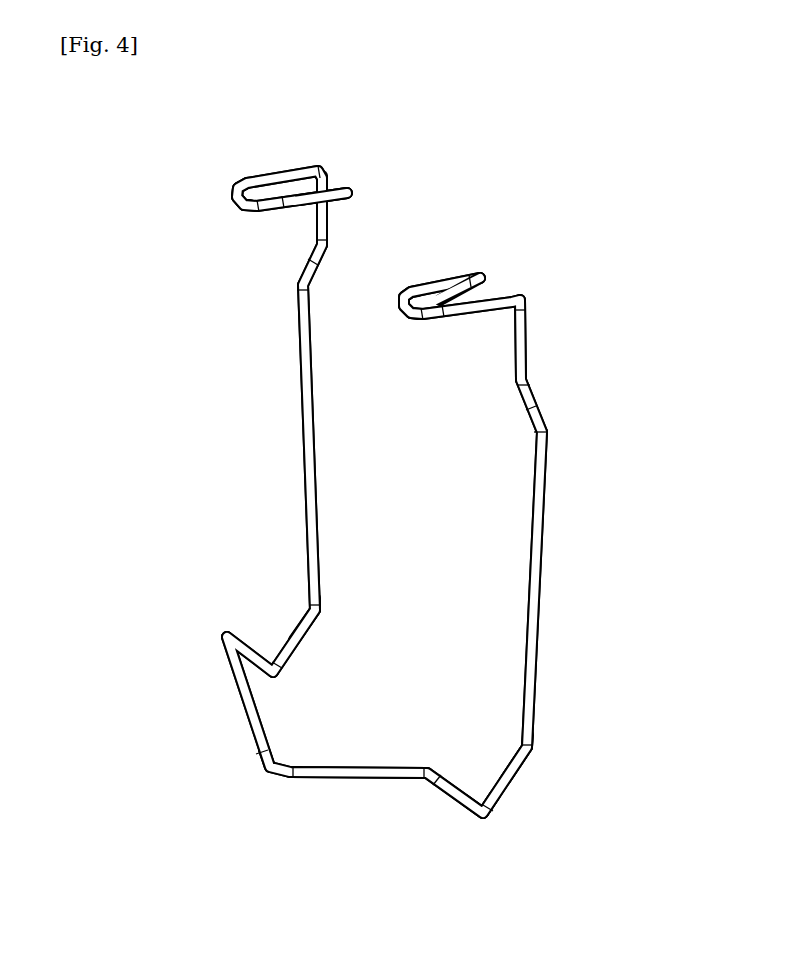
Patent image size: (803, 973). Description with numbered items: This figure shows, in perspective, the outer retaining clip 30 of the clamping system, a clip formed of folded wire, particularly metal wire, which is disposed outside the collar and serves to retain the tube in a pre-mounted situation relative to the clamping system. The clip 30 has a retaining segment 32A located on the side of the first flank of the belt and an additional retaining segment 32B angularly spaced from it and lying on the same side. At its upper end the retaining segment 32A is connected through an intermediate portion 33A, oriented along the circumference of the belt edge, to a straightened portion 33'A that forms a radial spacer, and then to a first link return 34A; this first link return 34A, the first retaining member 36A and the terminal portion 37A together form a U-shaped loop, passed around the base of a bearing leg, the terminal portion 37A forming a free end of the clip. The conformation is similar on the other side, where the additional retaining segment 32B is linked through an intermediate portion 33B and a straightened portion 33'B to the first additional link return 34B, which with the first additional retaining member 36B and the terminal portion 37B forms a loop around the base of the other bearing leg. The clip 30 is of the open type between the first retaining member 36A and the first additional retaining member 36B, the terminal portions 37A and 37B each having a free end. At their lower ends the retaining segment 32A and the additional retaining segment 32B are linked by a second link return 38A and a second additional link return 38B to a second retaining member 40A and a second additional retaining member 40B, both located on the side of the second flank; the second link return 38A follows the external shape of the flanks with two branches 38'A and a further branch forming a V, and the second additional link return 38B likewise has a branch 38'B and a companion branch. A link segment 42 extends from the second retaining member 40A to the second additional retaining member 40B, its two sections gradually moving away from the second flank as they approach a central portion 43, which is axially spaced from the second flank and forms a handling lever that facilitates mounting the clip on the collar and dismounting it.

The outer retaining clip 30 is at (415, 496).
The retaining segment 32A is at (303, 450).
The additional retaining segment 32B is at (543, 597).
The intermediate portion 33A is at (312, 273).
The intermediate portion 33B is at (537, 407).
The straightened portion 33'A is at (378, 210).
The straightened portion 33'B is at (577, 340).
The first link return 34A is at (275, 170).
The first additional link return 34B is at (492, 303).
The first retaining member 36A is at (240, 200).
The first additional retaining member 36B is at (408, 312).
The terminal portion 37A is at (337, 188).
The terminal portion 37B is at (467, 280).
The second link return 38A is at (270, 613).
The second additional link return 38B is at (482, 750).
The branch 38'A is at (346, 641).
The branch 38'B is at (557, 780).
The second retaining member 40A is at (222, 647).
The second additional retaining member 40B is at (437, 790).
The link segment 42 is at (307, 810).
The central portion 43 is at (275, 780).